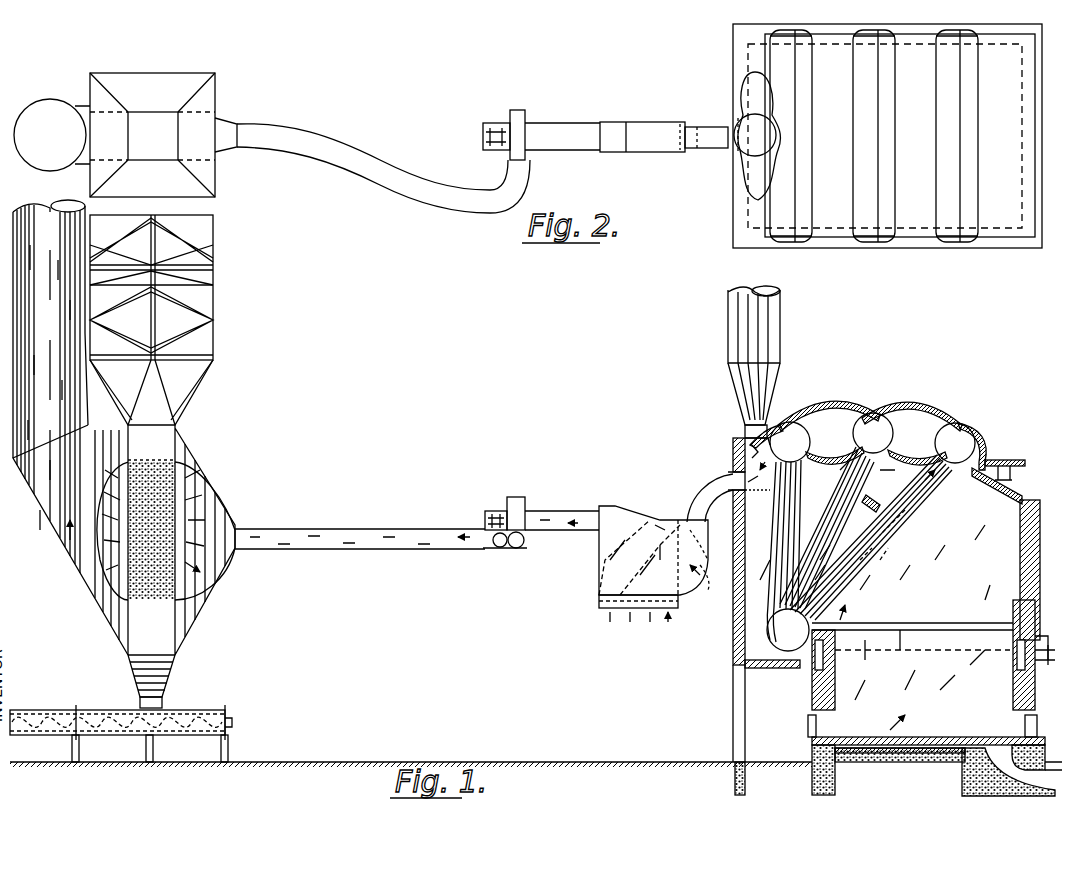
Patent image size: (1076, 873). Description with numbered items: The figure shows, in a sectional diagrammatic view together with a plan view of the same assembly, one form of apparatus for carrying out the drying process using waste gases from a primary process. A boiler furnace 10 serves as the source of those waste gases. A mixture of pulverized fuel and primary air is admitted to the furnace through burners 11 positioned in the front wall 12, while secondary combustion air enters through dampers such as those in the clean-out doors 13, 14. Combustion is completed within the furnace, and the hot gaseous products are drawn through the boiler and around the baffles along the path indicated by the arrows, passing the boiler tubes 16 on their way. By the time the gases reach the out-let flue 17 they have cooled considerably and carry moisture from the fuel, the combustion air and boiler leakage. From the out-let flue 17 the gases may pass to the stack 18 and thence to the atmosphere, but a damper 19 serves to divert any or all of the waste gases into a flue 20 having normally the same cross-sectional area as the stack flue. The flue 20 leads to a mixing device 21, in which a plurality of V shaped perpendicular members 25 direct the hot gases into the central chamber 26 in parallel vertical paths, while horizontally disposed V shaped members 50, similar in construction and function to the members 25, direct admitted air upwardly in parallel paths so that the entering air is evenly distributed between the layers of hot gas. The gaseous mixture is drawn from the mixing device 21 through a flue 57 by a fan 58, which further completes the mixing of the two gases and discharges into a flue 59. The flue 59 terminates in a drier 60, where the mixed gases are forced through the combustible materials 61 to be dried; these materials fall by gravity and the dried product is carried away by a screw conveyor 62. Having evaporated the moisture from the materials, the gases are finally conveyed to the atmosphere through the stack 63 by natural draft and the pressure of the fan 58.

In FIG. 2, the boiler furnace 10 is at (820, 40).
In FIG. 1, the boiler furnace 10 is at (907, 572).
In FIG. 1, the burners 11 is at (1040, 662).
In FIG. 2, the front wall 12 is at (1024, 160).
In FIG. 1, the front wall 12 is at (1020, 580).
In FIG. 1, the clean-out door 13 is at (1025, 726).
In FIG. 1, the clean-out door 14 is at (808, 727).
In FIG. 1, the boiler tubes and drums 16 is at (815, 560).
In FIG. 1, the out-let flue 17 is at (745, 456).
In FIG. 2, the stack 18 is at (755, 118).
In FIG. 1, the stack 18 is at (765, 372).
In FIG. 1, the damper 19 is at (748, 436).
In FIG. 2, the flue 20 is at (700, 132).
In FIG. 1, the flue 20 is at (715, 480).
In FIG. 2, the mixing device 21 is at (655, 140).
In FIG. 1, the mixing device 21 is at (675, 520).
In FIG. 2, the V shaped perpendicular members 25 is at (682, 132).
In FIG. 1, the V shaped perpendicular members 25 is at (705, 588).
In FIG. 1, the central chamber 26 is at (678, 585).
In FIG. 1, the horizontally disposed V shaped members 50 is at (599, 605).
In FIG. 2, the flue 57 is at (582, 142).
In FIG. 1, the flue 57 is at (583, 512).
In FIG. 2, the fan 58 is at (514, 110).
In FIG. 1, the fan 58 is at (512, 500).
In FIG. 2, the flue 59 is at (427, 197).
In FIG. 1, the flue 59 is at (378, 530).
In FIG. 2, the drier 60 is at (200, 170).
In FIG. 1, the drier 60 is at (195, 368).
In FIG. 2, the combustible materials 61 is at (153, 136).
In FIG. 1, the combustible materials 61 is at (195, 220).
In FIG. 1, the screw conveyor 62 is at (173, 710).
In FIG. 2, the stack 63 is at (52, 135).
In FIG. 1, the stack 63 is at (60, 395).